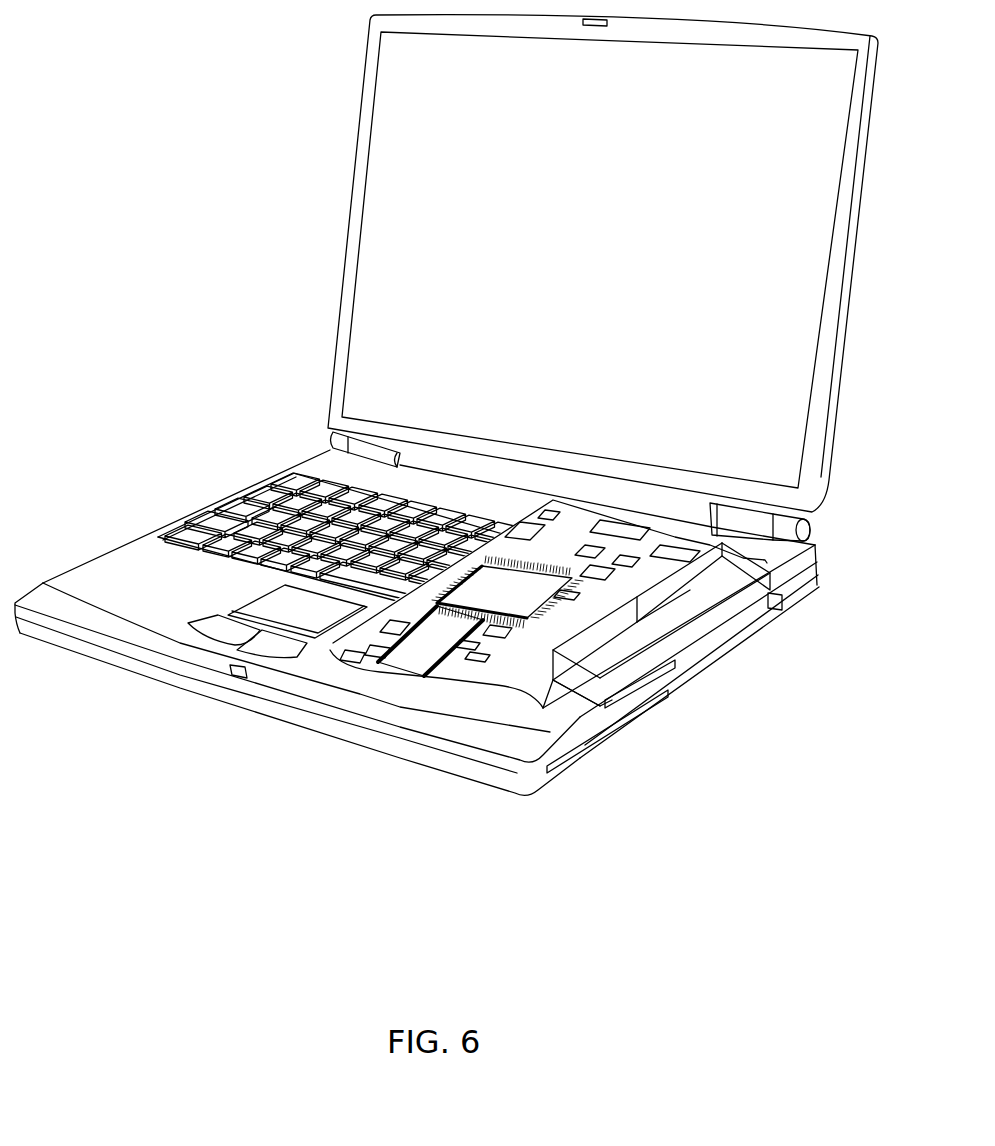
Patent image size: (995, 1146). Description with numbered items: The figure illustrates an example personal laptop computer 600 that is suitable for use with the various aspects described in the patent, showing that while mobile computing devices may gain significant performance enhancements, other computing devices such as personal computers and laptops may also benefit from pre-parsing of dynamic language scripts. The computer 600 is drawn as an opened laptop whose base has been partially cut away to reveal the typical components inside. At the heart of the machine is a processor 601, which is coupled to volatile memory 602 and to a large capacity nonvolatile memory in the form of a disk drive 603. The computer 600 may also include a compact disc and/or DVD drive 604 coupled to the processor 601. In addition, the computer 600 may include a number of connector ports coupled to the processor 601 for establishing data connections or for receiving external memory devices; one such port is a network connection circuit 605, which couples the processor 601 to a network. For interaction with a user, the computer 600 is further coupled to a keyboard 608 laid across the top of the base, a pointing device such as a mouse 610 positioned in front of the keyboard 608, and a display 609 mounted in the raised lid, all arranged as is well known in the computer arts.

The personal laptop computer 600 is at (270, 198).
The processor 601 is at (526, 605).
The volatile memory 602 is at (430, 650).
The disk drive 603 is at (557, 690).
The CD and/or DVD drive 604 is at (635, 637).
The network connection circuit 605 is at (707, 577).
The keyboard 608 is at (212, 520).
The display 609 is at (818, 486).
The mouse 610 is at (258, 612).